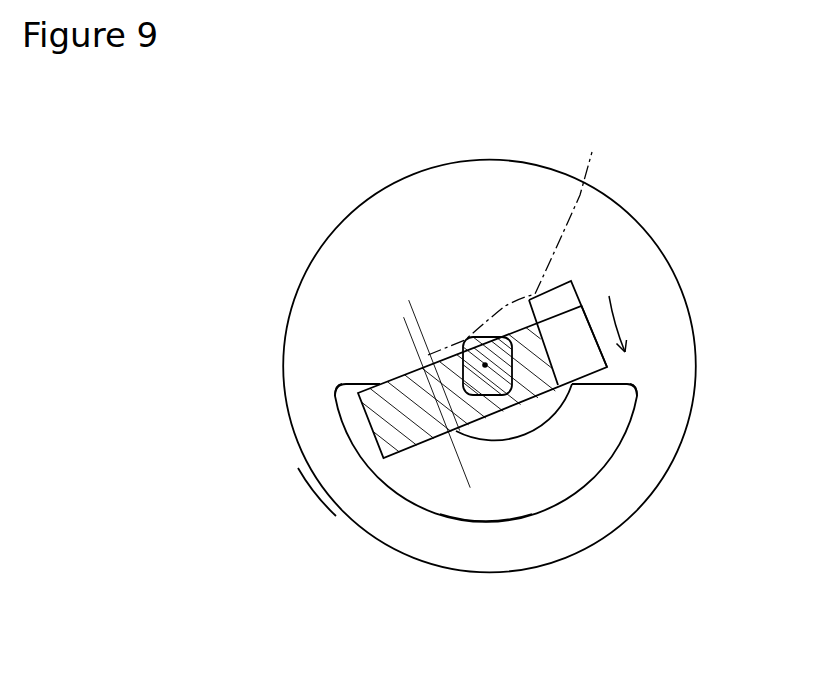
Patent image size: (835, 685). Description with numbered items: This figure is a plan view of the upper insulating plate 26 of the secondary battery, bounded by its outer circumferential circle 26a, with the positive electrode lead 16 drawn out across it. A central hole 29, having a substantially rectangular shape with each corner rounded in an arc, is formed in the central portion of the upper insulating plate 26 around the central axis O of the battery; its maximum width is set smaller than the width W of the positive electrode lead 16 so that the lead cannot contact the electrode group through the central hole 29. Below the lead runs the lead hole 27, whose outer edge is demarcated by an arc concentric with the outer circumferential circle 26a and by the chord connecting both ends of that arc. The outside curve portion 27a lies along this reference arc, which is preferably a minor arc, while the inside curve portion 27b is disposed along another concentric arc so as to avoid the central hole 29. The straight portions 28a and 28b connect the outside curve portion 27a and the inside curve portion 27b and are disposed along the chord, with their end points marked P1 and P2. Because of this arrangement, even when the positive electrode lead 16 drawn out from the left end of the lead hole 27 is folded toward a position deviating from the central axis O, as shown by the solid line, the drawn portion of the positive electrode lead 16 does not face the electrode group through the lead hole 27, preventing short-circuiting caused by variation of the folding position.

The positive electrode lead 16 is at (511, 334).
The upper insulating plate 26 is at (655, 245).
The outer circumferential circle 26a is at (322, 489).
The lead hole 27 is at (572, 455).
The outside curve portion 27a is at (488, 532).
The inside curve portion 27b is at (513, 440).
The straight portion 28a is at (356, 391).
The straight portion 28b is at (614, 384).
The central hole 29 is at (467, 338).
The central axis O is at (485, 362).
The first corner point P1 is at (333, 396).
The second corner point P2 is at (640, 399).
The width of the positive electrode lead W is at (425, 438).